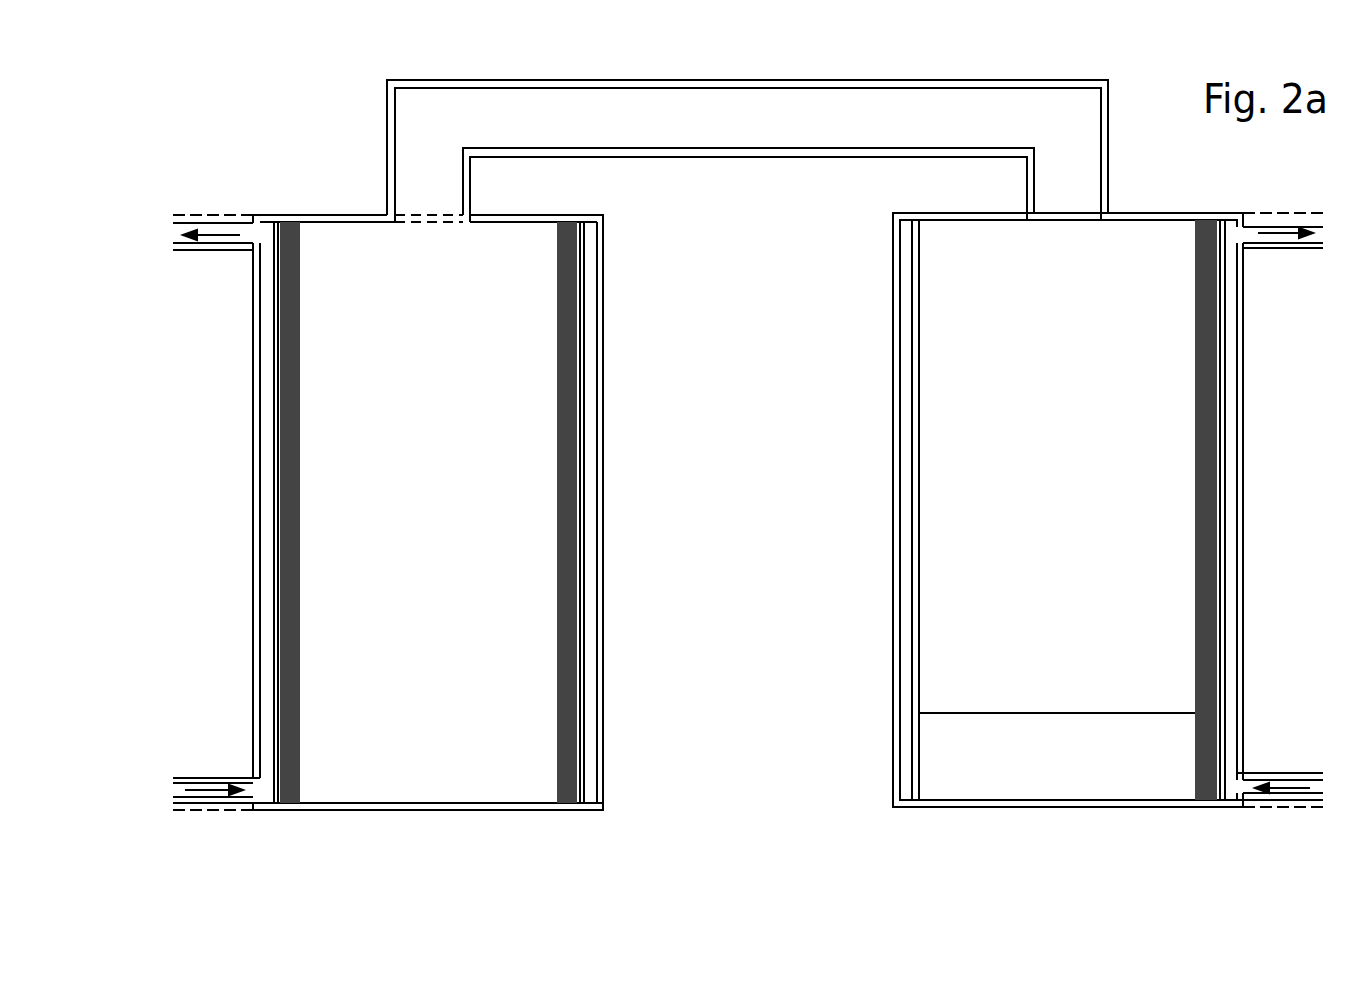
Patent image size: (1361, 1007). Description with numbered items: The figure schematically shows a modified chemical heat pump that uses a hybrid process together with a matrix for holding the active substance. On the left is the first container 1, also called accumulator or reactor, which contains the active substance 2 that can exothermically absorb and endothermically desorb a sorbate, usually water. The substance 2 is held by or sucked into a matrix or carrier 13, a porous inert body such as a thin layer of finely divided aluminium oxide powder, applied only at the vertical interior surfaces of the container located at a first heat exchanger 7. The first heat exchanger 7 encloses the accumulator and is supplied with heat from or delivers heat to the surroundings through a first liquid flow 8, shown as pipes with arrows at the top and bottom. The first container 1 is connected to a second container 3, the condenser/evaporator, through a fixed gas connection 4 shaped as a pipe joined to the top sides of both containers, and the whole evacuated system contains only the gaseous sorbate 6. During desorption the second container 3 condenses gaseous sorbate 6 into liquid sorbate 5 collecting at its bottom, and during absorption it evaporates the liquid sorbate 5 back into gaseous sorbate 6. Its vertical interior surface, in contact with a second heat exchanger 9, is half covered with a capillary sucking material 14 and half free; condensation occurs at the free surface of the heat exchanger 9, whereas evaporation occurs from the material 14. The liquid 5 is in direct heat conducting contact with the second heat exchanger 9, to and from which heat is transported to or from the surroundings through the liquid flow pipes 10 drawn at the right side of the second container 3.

The first container 1 is at (252, 487).
The active substance 2 is at (562, 525).
The second container 3 is at (1244, 443).
The gas connection 4 is at (726, 85).
The liquid sorbate 5 is at (948, 748).
The gaseous sorbate 6 is at (528, 248).
The first heat exchanger 7 is at (268, 372).
The first liquid flow 8 is at (178, 237).
The second heat exchanger 9 is at (1229, 375).
The heat transfer fluid pipe 10 is at (1315, 237).
The matrix 13 is at (290, 668).
The capillary sucking material 14 is at (1203, 537).